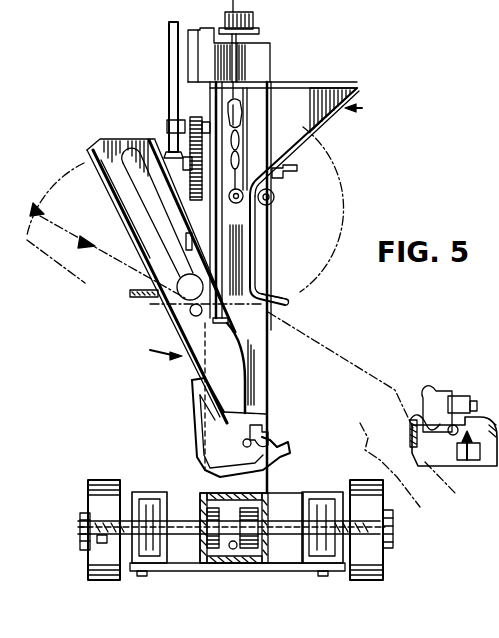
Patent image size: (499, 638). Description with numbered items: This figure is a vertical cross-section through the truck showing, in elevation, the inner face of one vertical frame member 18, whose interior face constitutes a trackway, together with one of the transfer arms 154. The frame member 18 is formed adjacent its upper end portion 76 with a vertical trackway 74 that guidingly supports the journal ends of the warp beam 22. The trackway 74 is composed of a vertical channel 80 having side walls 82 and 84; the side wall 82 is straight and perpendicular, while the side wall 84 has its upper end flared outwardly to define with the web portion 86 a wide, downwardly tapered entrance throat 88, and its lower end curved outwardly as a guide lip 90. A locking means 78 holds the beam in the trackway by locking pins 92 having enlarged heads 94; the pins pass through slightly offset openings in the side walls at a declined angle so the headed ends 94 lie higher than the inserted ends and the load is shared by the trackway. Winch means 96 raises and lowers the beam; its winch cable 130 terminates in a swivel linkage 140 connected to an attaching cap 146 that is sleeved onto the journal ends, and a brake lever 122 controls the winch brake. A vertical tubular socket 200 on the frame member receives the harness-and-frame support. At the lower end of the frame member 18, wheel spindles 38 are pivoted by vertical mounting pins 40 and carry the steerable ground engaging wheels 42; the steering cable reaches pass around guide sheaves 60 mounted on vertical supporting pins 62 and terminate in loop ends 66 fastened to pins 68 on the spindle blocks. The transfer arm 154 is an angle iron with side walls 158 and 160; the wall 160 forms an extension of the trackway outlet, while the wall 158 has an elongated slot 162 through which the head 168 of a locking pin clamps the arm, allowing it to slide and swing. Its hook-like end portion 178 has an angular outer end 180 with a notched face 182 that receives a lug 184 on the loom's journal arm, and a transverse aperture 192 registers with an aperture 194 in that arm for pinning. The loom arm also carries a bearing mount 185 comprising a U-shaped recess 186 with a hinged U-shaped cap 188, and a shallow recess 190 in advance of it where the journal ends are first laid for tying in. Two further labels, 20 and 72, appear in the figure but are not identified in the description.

The vertical frame member 18 is at (266, 338).
The direction of movement arrow 20 is at (362, 108).
The warp beam 22 is at (357, 137).
The wheel spindle 38 is at (338, 0).
The vertical mounting pin 40 is at (160, 490).
The ground engaging wheel 42 is at (408, 0).
The guide sheave 60 is at (200, 497).
The vertical supporting pin 62 is at (275, 500).
The loop end 66 is at (80, 527).
The pin 68 is at (105, 541).
The rack gear 72 is at (213, 86).
The vertical trackway 74 is at (262, 237).
The upper end portion 76 is at (268, 66).
The locking means 78 is at (285, 196).
The vertical channel 80 is at (250, 258).
The side wall 82 is at (262, 268).
The side wall 84 is at (288, 292).
The web portion 86 is at (255, 92).
The entrance throat 88 is at (335, 92).
The guide lip 90 is at (287, 311).
The locking pin 92 is at (207, 203).
The enlarged head 94 is at (285, 186).
The winch means 96 is at (172, 152).
The brake lever 122 is at (170, 56).
The winch cable 130 is at (257, 38).
The swivel linkage 140 is at (241, 130).
The attaching cap 146 is at (250, 162).
The transfer arm 154 is at (141, 260).
The side wall 158 is at (112, 143).
The side wall 160 is at (90, 157).
The elongated longitudinal slot 162 is at (112, 178).
The head 168 is at (165, 302).
The hook-like end portion 178 is at (190, 410).
The angular outer end 180 is at (233, 440).
The notched out face 182 is at (285, 447).
The lug 184 is at (482, 462).
The bearing mount 185 is at (474, 390).
The U-shaped recess 186 is at (428, 417).
The hinged U-shaped portion 188 is at (437, 385).
The shallow recess 190 is at (410, 425).
The transverse aperture 192 is at (252, 427).
The transverse aperture 194 is at (452, 396).
The vertical tubular socket 200 is at (184, 27).